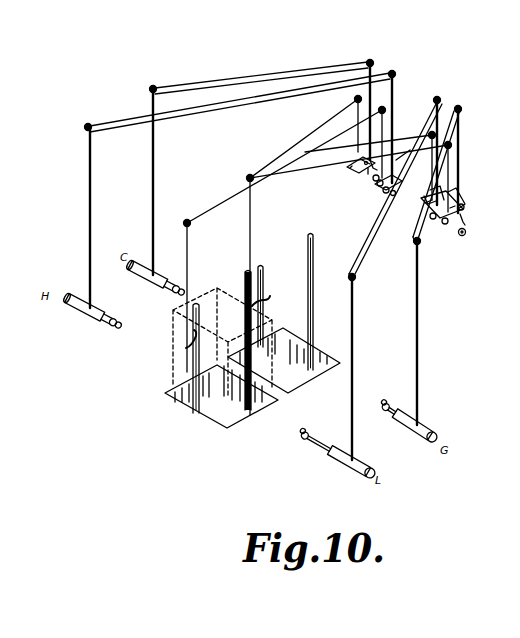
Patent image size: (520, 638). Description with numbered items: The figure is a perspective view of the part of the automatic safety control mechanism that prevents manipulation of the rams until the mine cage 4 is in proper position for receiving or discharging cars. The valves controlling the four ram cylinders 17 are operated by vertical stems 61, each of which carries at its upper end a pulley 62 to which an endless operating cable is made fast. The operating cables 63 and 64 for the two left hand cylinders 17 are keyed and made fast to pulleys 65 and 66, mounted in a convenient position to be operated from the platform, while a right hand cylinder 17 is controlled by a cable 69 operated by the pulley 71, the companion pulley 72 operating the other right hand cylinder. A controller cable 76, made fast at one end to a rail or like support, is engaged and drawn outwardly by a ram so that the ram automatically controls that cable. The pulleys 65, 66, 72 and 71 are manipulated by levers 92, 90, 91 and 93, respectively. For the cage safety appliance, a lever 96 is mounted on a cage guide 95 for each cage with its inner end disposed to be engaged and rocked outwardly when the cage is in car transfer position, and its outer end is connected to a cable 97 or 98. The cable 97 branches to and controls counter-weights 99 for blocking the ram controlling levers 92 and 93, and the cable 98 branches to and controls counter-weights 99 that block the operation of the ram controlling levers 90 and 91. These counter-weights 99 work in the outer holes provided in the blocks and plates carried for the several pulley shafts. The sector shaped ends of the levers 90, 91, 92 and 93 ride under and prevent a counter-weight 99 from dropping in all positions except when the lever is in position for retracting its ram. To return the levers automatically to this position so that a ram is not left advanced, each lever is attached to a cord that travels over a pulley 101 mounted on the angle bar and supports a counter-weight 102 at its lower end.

The mine cage 4 is at (178, 372).
The ram cylinder 17 is at (96, 318).
The vertical stem 61 is at (151, 185).
The pulley 62 is at (150, 90).
The operating cable 63 is at (261, 73).
The operating cable 64 is at (253, 98).
The pulley 65 is at (374, 63).
The pulley 66 is at (396, 75).
The cable 69 is at (412, 226).
The pulley 71 is at (462, 109).
The pulley 72 is at (441, 100).
The controller cable 76 is at (370, 232).
The lever 90 is at (398, 160).
The lever 91 is at (445, 199).
The lever 92 is at (396, 140).
The lever 93 is at (463, 200).
The cage guide 95 is at (200, 303).
The lever 96 is at (184, 347).
The cable 97 is at (251, 237).
The cable 98 is at (189, 262).
The counter-weight 99 is at (357, 171).
The pulley 101 is at (466, 225).
The counter-weight 102 is at (466, 232).